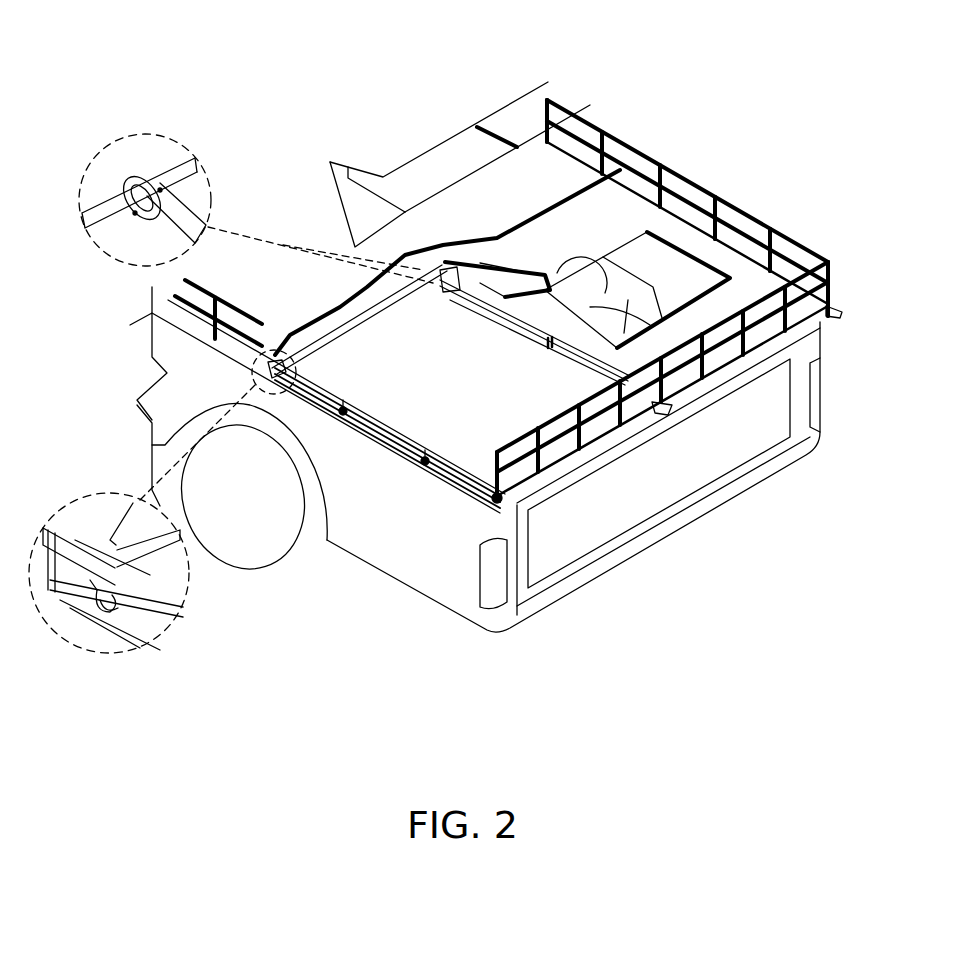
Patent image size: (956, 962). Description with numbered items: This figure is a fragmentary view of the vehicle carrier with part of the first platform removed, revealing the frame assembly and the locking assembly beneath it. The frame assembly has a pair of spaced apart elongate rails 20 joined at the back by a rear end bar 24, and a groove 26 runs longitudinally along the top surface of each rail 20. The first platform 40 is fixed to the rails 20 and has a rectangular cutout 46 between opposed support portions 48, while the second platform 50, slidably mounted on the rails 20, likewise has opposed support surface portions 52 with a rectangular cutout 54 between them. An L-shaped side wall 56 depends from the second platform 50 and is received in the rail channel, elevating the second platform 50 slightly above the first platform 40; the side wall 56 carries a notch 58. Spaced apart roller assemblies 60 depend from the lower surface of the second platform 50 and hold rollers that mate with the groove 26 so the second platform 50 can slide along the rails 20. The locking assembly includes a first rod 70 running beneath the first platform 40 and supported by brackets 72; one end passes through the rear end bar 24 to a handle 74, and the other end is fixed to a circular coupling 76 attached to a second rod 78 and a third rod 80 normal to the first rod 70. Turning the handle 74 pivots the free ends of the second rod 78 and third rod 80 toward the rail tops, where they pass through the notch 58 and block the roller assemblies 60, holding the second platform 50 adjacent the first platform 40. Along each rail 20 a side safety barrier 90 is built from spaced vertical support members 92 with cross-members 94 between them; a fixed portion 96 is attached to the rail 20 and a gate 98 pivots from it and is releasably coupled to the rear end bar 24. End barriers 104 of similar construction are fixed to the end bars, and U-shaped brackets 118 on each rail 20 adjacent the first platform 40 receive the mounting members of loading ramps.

The elongate rail 20 is at (133, 640).
The rear end bar 24 is at (718, 380).
The groove 26 is at (180, 620).
The first platform 40 is at (621, 213).
The rectangular cutout 46 is at (670, 243).
The support portion 48 is at (618, 309).
The second platform 50 is at (543, 153).
The support surface portion 52 is at (526, 205).
The rectangular cutout 54 is at (478, 117).
The L-shaped side wall 56 is at (118, 540).
The notch 58 is at (140, 520).
The roller assembly 60 is at (65, 610).
The first rod 70 is at (490, 312).
The bracket 72 is at (550, 340).
The handle 74 is at (662, 410).
The circular coupling 76 is at (150, 175).
The second rod 78 is at (95, 205).
The third rod 80 is at (188, 151).
The side safety barrier 90 is at (622, 143).
The vertical support member 92 is at (800, 256).
The cross-member 94 is at (770, 232).
The fixed portion 96 is at (547, 103).
The gate 98 is at (717, 197).
The end barrier 104 is at (527, 427).
The U-shaped bracket 118 is at (423, 463).